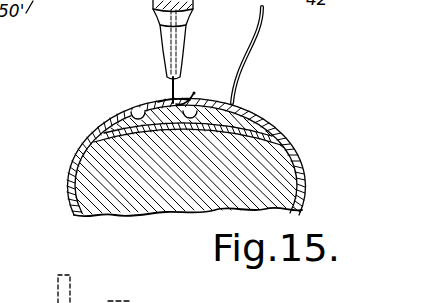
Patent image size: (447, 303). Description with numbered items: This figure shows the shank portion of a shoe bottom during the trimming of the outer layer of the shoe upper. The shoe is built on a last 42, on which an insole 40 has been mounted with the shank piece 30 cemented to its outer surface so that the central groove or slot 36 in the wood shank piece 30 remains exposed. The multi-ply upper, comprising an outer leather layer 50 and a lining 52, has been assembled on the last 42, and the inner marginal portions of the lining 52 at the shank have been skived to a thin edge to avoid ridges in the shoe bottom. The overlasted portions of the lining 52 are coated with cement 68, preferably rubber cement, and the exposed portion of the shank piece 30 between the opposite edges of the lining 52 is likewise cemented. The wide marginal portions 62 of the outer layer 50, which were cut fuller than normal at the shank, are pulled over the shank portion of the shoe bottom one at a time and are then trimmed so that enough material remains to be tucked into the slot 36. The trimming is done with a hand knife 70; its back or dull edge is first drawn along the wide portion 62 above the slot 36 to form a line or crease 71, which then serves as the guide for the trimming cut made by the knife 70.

The shank piece 30 is at (246, 126).
The groove 36 is at (158, 104).
The insole 40 is at (86, 153).
The last 42 is at (303, 200).
The outer leather layer 50 is at (294, 168).
The lining 52 is at (70, 203).
The wide marginal portions 62 is at (155, 100).
The cement 68 is at (133, 110).
The hand knife 70 is at (181, 33).
The crease 71 is at (165, 101).